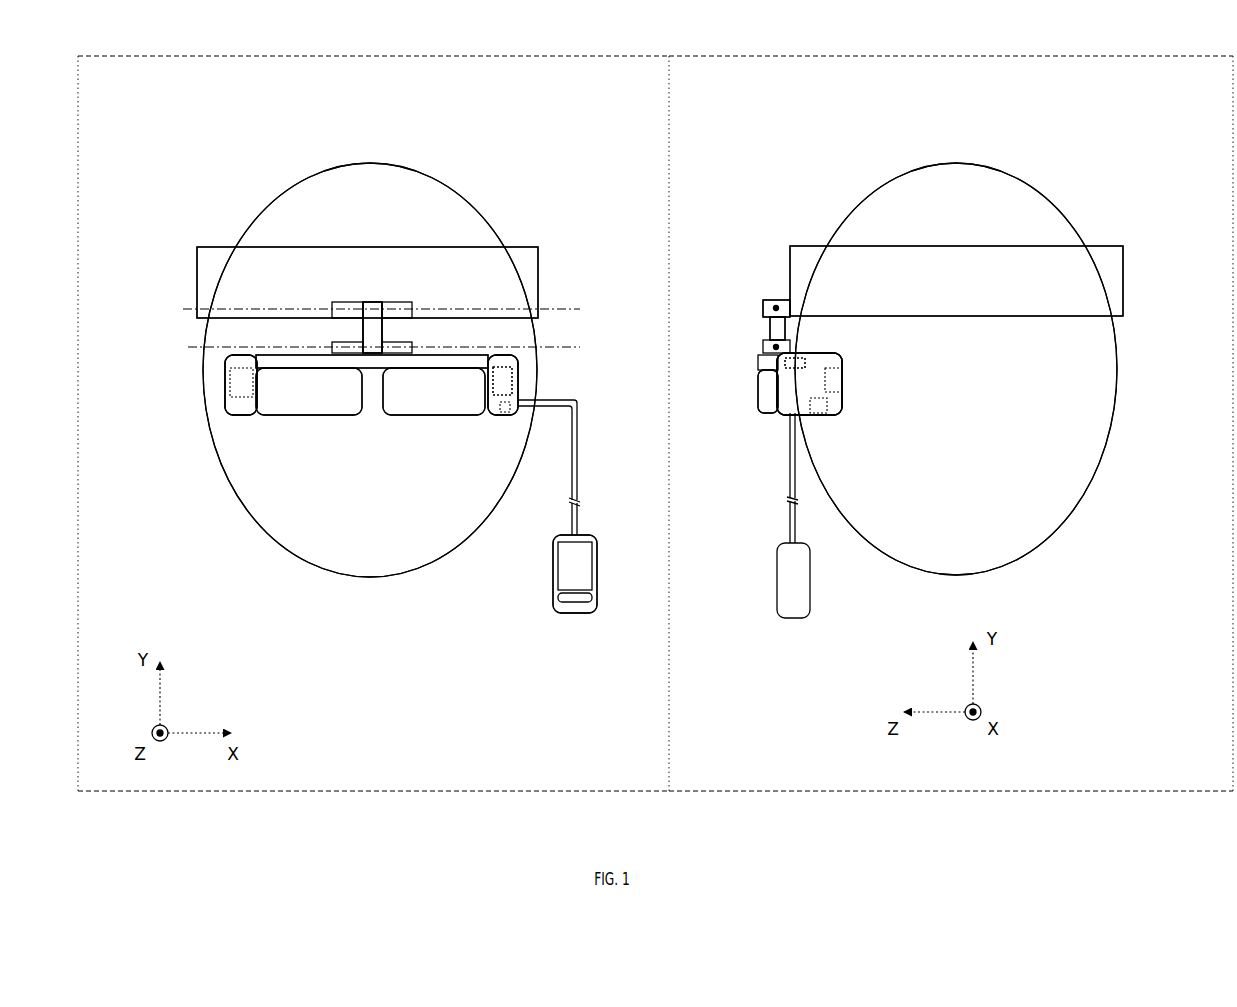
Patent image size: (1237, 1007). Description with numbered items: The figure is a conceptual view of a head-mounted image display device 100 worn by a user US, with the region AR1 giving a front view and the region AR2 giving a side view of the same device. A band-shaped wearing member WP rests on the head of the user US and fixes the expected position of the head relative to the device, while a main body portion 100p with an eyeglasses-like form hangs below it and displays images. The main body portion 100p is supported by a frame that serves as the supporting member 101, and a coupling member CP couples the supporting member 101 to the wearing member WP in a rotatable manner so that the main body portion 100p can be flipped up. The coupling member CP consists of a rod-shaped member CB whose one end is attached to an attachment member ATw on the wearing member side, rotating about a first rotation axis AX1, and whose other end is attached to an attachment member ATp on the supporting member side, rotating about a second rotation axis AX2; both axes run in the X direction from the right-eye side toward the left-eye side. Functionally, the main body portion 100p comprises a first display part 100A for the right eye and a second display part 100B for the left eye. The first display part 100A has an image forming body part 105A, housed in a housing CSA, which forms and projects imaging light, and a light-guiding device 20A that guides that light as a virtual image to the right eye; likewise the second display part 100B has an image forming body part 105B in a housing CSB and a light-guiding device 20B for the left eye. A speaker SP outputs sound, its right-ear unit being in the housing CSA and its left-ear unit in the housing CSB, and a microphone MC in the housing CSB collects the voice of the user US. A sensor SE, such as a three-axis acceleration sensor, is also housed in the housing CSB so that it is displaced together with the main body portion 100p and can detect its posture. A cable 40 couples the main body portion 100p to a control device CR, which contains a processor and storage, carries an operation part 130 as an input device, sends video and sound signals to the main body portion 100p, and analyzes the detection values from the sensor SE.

The region AR1 is at (301, 96).
The region AR2 is at (734, 92).
The image display device 100 is at (244, 178).
The main body portion 100p is at (212, 365).
The first display part 100A is at (290, 430).
The second display part 100B is at (451, 430).
The supporting member 101 is at (222, 322).
The image forming body part 105A is at (232, 402).
The image forming body part 105B is at (522, 398).
The light-guiding device 20A is at (343, 400).
The light-guiding device 20B is at (405, 400).
The cable 40 is at (580, 490).
The operation part 130 is at (572, 575).
The user US is at (277, 523).
The wearing member WP is at (215, 299).
The first rotation axis AX1 is at (215, 309).
The second rotation axis AX2 is at (208, 340).
The attachment member ATw is at (397, 300).
The attachment member ATp is at (365, 368).
The rod-shaped member CB is at (372, 336).
The coupling member CP is at (400, 331).
The sensor SE is at (508, 356).
The speaker SP is at (238, 375).
The microphone MC is at (505, 413).
The housing CSA is at (238, 418).
The housing CSB is at (514, 416).
The control device CR is at (575, 613).